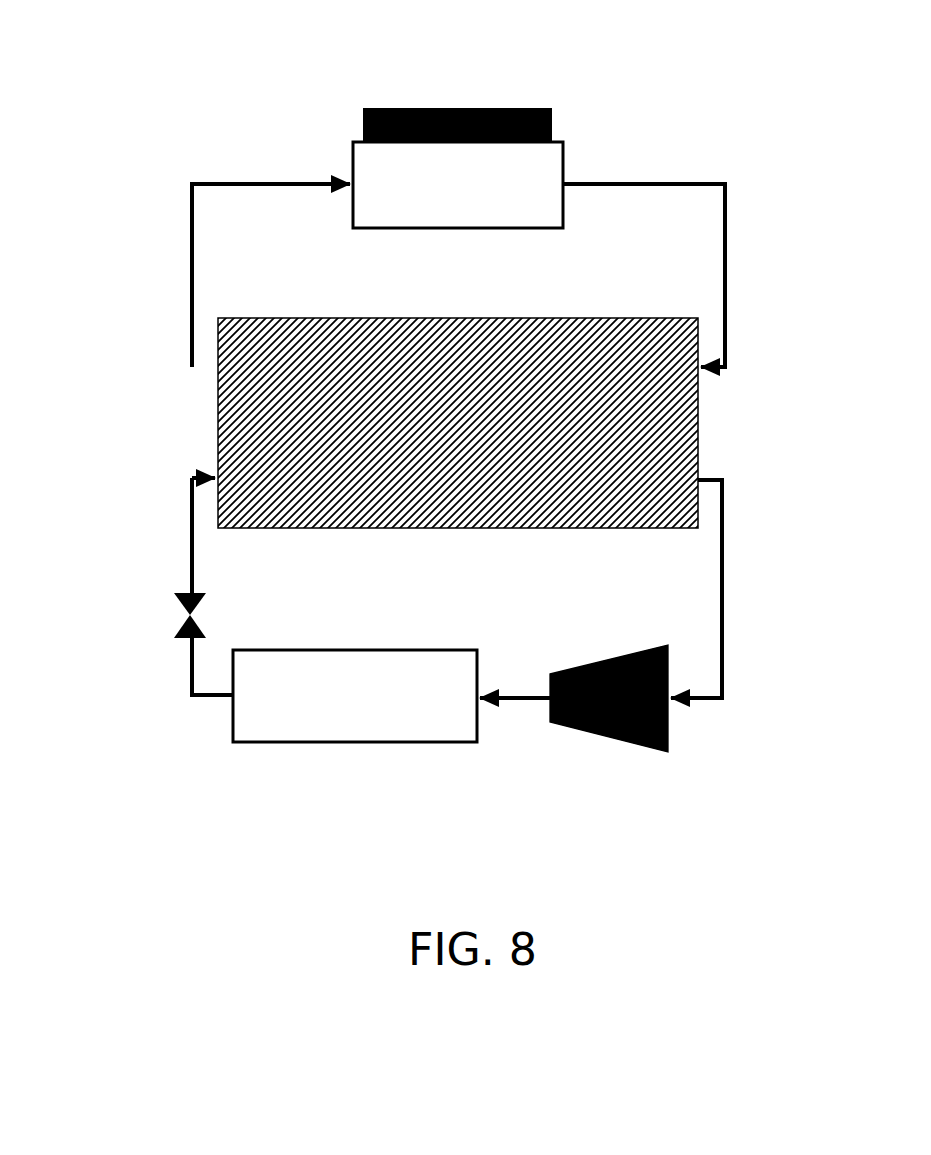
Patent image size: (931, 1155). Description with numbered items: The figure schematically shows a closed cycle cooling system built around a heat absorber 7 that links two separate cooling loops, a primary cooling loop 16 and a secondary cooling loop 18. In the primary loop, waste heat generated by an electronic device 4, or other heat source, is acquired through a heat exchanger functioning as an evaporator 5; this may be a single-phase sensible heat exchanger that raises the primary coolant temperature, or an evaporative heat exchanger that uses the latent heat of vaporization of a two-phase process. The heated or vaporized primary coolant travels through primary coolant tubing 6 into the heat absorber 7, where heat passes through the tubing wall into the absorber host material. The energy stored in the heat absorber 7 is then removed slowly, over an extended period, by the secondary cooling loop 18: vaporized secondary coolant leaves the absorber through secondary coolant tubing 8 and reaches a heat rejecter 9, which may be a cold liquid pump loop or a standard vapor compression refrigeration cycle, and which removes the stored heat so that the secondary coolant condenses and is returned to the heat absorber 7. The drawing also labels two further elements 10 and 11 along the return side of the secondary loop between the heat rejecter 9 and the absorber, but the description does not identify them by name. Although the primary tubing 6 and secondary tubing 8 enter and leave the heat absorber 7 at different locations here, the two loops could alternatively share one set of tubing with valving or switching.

The electronic device 4 is at (485, 105).
The evaporator 5 is at (407, 182).
The primary coolant tubing 6 is at (697, 178).
The heat absorber 7 is at (216, 413).
The secondary coolant tubing 8 is at (731, 547).
The heat rejecter 9 is at (610, 738).
The condenser 10 is at (353, 748).
The expansion valve 11 is at (177, 617).
The primary cooling loop 16 is at (740, 282).
The secondary cooling loop 18 is at (755, 610).